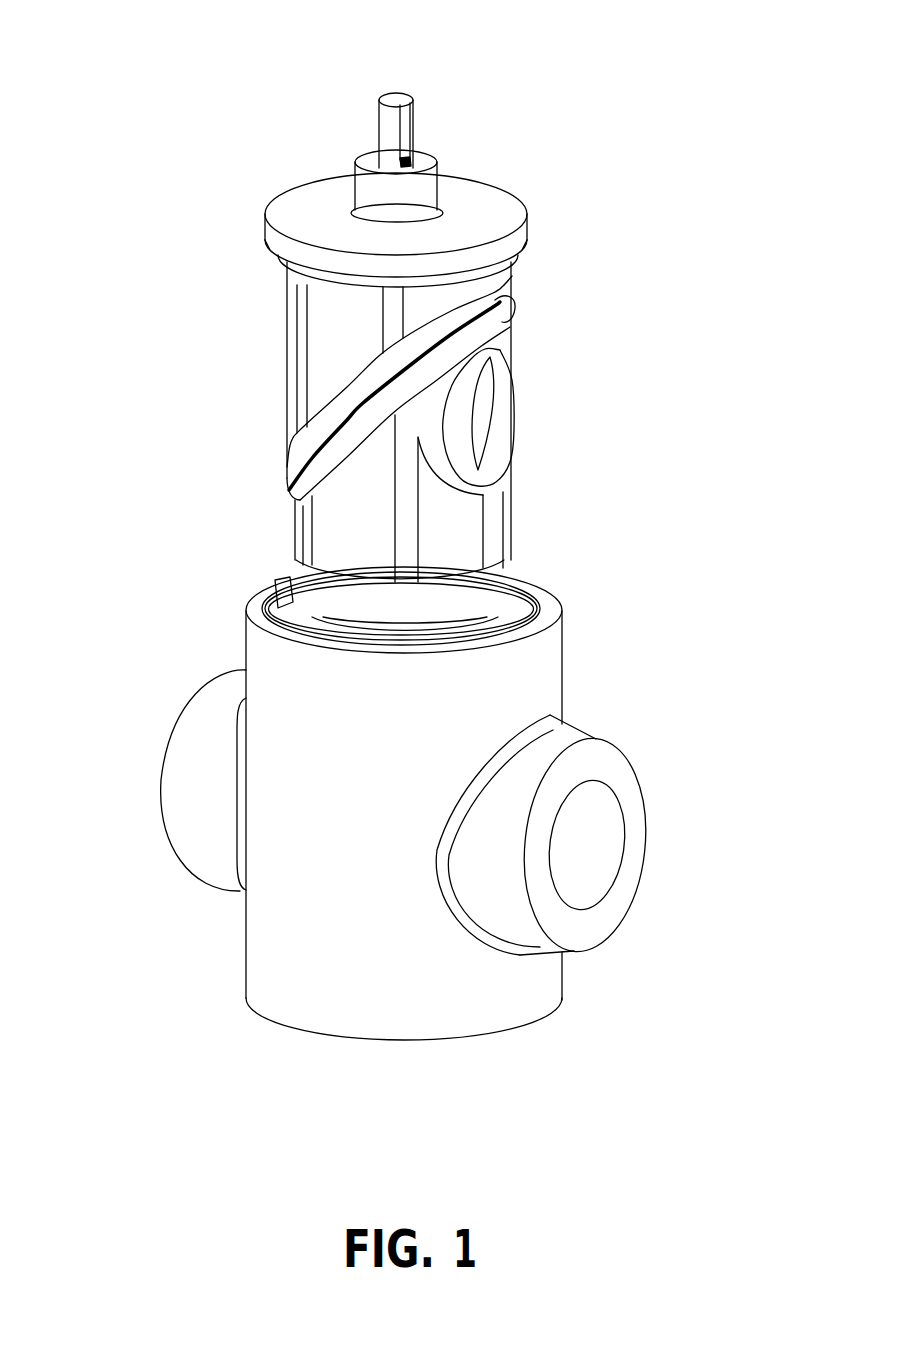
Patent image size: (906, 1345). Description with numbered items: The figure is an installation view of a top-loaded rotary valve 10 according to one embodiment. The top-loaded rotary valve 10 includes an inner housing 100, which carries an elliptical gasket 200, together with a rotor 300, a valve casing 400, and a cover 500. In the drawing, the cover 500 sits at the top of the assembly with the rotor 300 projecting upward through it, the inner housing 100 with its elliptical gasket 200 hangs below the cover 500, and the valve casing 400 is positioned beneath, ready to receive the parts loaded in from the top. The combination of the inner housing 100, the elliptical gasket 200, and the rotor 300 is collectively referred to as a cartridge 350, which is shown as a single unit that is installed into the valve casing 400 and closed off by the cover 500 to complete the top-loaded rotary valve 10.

The top-loaded rotary valve 10 is at (190, 88).
The inner housing 100 is at (543, 490).
The elliptical gasket 200 is at (515, 305).
The rotor 300 is at (397, 97).
The cartridge 350 is at (223, 552).
The valve casing 400 is at (246, 922).
The cover 500 is at (526, 201).